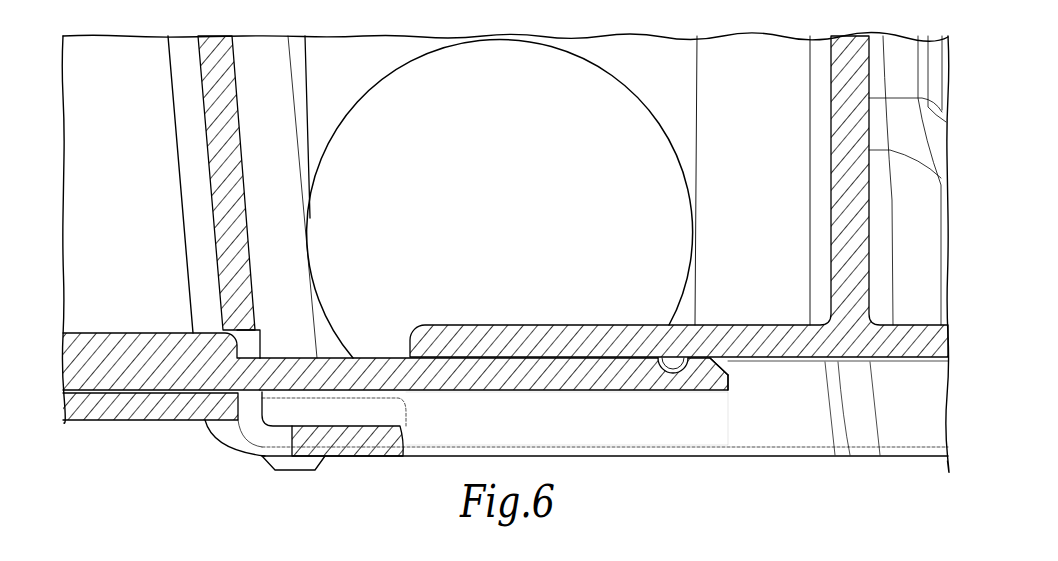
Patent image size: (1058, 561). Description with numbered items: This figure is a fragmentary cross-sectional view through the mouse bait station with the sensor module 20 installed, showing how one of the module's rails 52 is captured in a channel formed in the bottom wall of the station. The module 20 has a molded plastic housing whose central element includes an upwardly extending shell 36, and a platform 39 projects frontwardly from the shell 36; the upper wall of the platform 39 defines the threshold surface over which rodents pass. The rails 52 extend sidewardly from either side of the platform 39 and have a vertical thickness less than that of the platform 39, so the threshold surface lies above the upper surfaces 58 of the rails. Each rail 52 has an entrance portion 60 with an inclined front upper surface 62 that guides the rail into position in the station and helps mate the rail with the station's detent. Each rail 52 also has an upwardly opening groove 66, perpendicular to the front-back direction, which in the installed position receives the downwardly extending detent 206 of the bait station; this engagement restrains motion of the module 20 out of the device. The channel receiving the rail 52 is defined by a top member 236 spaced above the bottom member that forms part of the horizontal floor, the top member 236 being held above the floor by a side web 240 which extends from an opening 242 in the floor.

The sensor module 20 is at (135, 421).
The shell 36 is at (203, 110).
The platform 39 is at (112, 332).
The rail 52 is at (525, 392).
The upper surface of the rail 58 is at (377, 357).
The entrance portion 60 is at (722, 392).
The inclined front upper surface 62 is at (730, 368).
The groove 66 is at (670, 373).
The detent 206 is at (686, 367).
The top member 236 is at (505, 325).
The side web 240 is at (484, 423).
The opening 242 is at (403, 432).